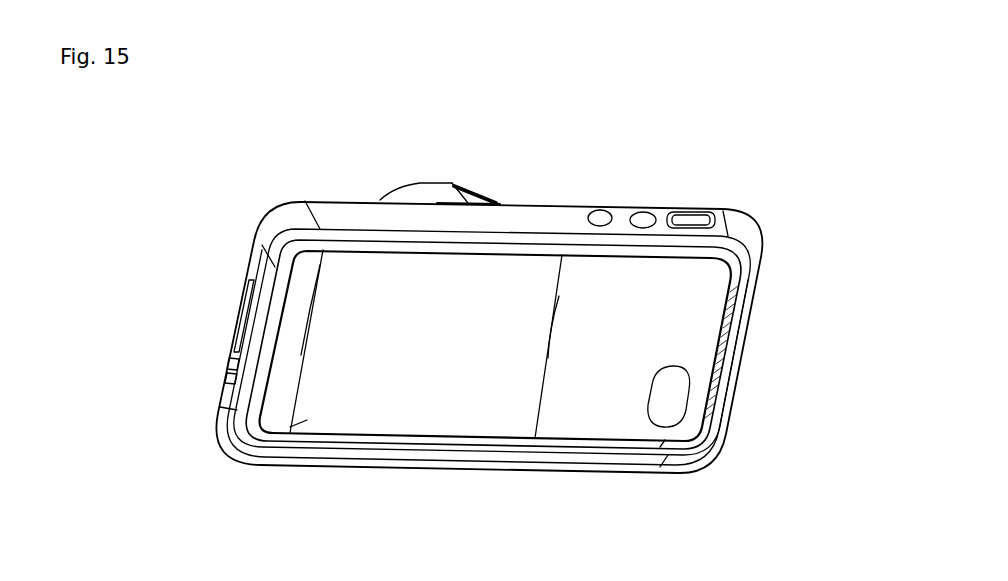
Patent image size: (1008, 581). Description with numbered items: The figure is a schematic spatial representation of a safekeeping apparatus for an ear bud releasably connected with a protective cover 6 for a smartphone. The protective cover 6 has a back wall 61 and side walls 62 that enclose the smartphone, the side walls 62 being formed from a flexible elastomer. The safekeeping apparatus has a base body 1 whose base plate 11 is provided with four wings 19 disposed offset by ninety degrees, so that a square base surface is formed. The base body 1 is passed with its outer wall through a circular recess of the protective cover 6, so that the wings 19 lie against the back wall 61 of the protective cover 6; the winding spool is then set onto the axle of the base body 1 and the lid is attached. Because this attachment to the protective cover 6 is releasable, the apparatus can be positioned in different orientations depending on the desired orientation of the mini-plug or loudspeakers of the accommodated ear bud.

The base body 1 is at (437, 203).
The protective cover 6 is at (730, 208).
The back wall 61 is at (677, 323).
The side walls 62 is at (663, 457).
The base plate 11 is at (433, 362).
The wings 19 is at (307, 421).